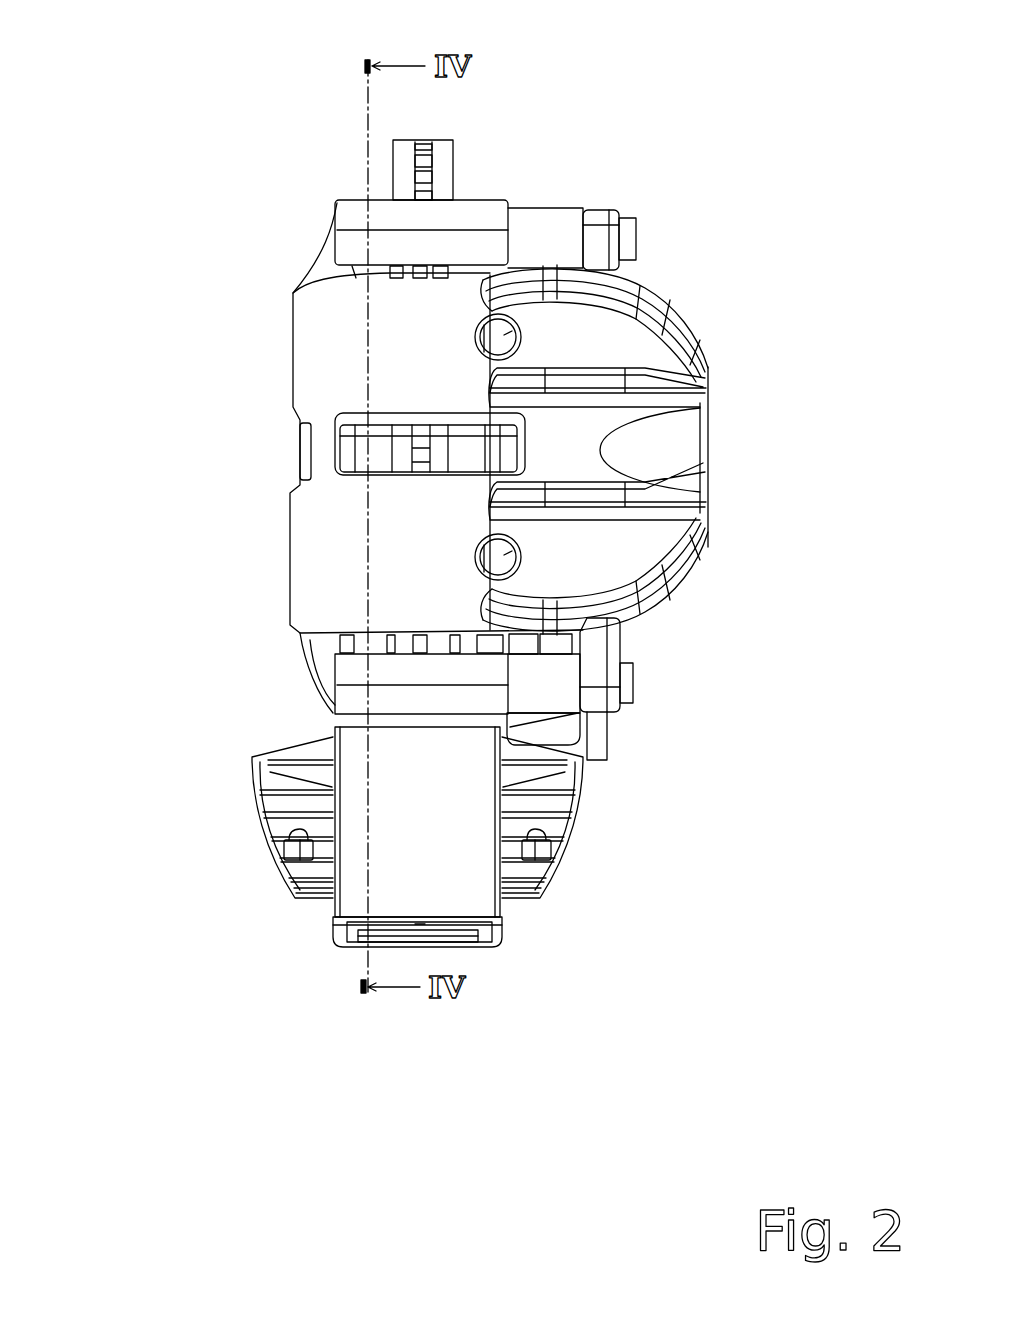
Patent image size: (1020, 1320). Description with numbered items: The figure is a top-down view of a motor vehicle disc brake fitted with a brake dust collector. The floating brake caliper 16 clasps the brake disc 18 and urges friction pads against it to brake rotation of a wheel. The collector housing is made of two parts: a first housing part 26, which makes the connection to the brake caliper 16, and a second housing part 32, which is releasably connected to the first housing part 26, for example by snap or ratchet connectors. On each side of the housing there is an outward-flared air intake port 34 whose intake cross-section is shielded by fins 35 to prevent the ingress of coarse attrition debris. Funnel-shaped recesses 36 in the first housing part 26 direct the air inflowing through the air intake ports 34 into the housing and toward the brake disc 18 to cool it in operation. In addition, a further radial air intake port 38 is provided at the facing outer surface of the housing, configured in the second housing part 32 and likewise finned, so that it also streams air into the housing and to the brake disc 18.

The brake disc 18 is at (443, 167).
The brake caliper 16 is at (667, 457).
The first housing part 26 is at (392, 772).
The funnel-shaped recesses 36 is at (257, 785).
The air intake port 34 is at (288, 803).
The fins 35 is at (313, 882).
The second housing part 32 is at (337, 933).
The air intake port 38 is at (465, 933).